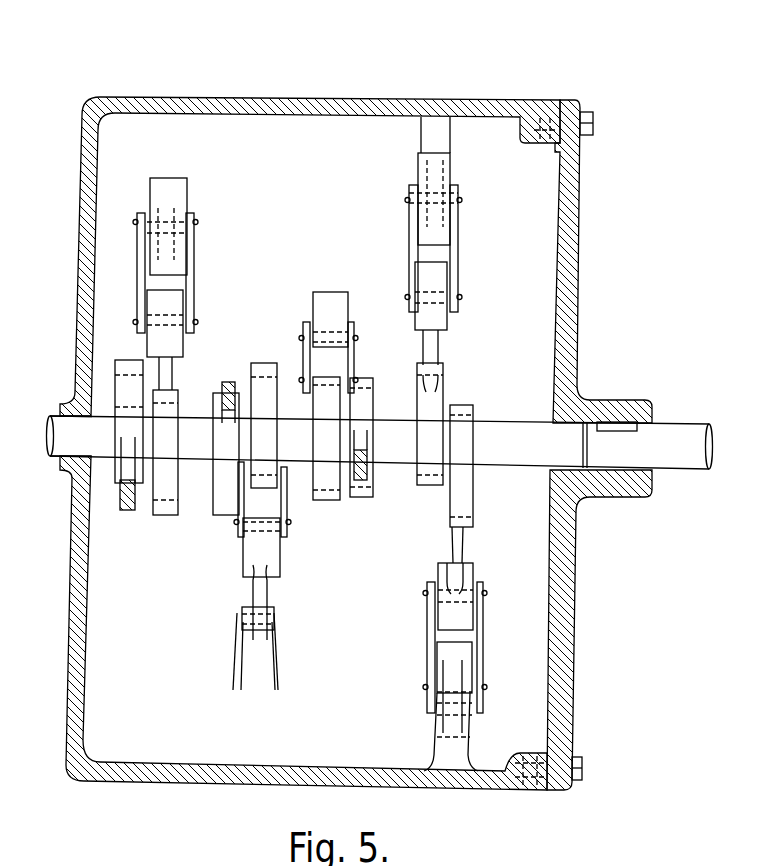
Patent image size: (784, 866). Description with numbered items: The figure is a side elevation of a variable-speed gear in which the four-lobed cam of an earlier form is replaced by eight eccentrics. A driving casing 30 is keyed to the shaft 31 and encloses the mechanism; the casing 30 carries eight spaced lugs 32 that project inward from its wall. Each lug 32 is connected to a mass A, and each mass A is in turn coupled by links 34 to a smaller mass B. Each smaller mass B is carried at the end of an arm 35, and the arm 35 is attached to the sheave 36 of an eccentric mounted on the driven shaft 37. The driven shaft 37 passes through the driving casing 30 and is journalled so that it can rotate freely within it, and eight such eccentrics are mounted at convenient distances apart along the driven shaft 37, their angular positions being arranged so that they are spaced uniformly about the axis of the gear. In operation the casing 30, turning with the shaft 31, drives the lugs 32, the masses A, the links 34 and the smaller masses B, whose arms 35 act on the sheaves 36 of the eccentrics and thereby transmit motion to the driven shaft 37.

The driving casing 30 is at (353, 104).
The shaft 31 is at (673, 437).
The lug 32 is at (440, 146).
The link 34 is at (192, 266).
The arm 35 is at (172, 378).
The sheave 36 is at (160, 506).
The driven shaft 37 is at (63, 444).
The mass A is at (177, 190).
The smaller mass B is at (183, 348).